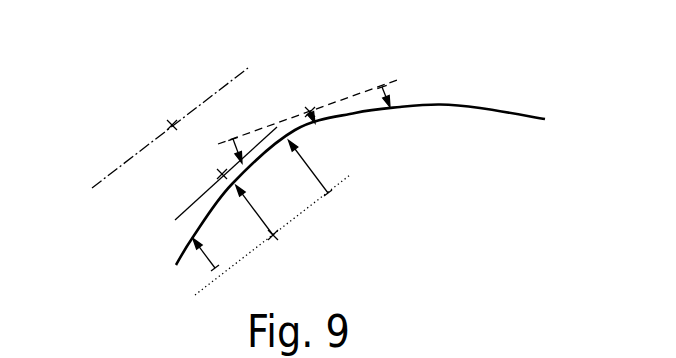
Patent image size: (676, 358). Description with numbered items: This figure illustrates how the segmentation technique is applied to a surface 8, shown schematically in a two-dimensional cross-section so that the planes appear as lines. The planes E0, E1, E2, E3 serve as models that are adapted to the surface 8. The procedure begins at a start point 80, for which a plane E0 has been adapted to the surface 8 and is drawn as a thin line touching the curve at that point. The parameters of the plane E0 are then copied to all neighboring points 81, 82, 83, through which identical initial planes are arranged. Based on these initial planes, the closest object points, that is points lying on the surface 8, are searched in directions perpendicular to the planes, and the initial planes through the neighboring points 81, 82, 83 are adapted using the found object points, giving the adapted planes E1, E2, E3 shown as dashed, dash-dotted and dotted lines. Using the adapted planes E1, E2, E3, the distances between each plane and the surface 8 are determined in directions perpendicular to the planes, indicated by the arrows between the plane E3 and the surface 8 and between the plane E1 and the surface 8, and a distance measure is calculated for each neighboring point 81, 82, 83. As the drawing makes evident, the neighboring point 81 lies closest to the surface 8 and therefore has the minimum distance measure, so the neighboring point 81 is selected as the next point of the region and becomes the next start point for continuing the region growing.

The surface 8 is at (468, 106).
The start point 80 is at (222, 175).
The neighboring point 81 is at (310, 110).
The neighboring point 82 is at (172, 125).
The neighboring point 83 is at (275, 235).
The plane E0 is at (182, 208).
The adapted plane E1 is at (362, 92).
The adapted plane E2 is at (110, 167).
The adapted plane E3 is at (310, 208).